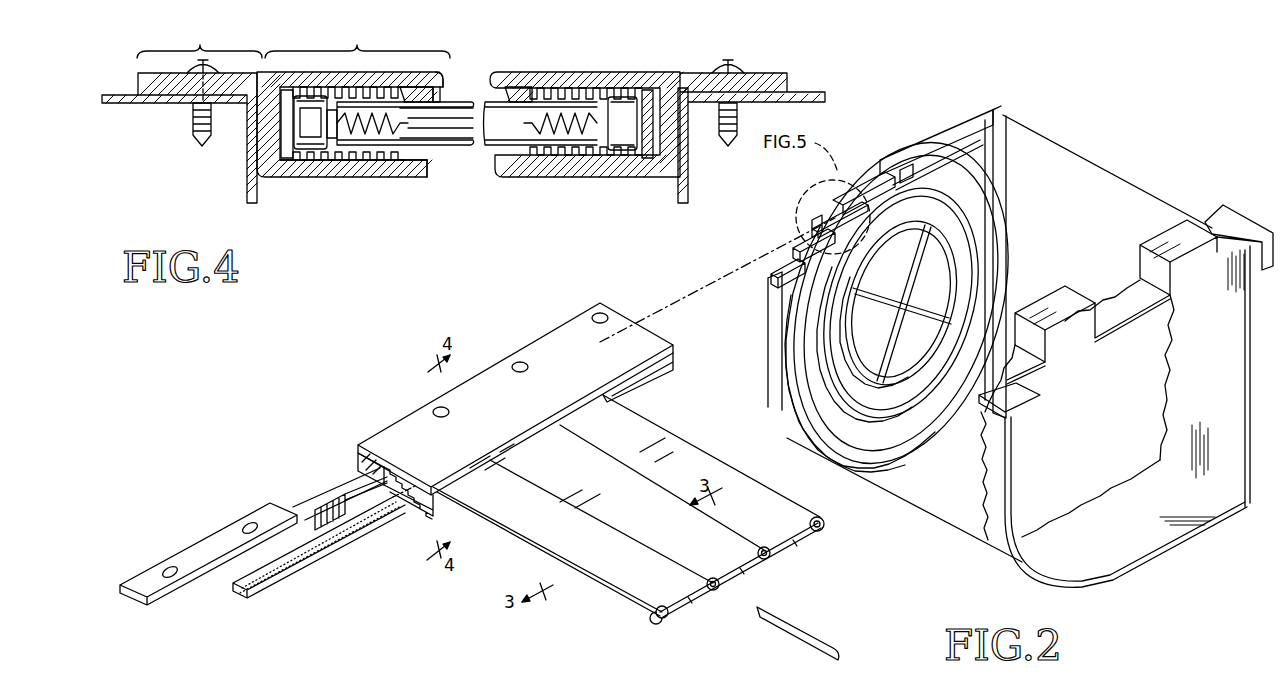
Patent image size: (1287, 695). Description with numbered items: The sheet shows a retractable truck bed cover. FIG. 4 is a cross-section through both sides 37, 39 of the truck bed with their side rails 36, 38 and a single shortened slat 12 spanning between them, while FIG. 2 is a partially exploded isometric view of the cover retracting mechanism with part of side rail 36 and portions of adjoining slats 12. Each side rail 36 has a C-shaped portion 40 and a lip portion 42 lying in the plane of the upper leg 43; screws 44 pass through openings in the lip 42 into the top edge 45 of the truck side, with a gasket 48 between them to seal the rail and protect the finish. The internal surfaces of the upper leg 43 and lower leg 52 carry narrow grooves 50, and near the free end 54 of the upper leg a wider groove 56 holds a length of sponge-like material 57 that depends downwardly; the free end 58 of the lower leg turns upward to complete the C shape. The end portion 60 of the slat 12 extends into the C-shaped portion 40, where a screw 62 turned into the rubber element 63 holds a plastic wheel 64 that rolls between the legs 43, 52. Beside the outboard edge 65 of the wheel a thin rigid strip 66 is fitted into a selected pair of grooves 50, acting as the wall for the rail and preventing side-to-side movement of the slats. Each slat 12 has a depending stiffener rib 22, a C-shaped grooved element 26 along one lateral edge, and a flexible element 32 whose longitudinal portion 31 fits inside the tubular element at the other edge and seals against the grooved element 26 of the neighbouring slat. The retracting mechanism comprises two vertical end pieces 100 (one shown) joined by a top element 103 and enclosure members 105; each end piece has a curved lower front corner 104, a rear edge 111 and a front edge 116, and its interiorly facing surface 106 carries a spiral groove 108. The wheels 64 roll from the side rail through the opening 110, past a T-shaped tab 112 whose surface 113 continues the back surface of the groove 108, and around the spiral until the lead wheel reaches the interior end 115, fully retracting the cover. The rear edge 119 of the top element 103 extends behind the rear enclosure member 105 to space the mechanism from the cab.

In FIG. 4, the slat-like element 12 is at (457, 103).
In FIG. 2, the slat-like element 12 is at (748, 540).
In FIG. 2, the stiffener rib 22 is at (794, 540).
In FIG. 2, the grooved element 26 is at (824, 528).
In FIG. 2, the longitudinal portion 31 is at (660, 614).
In FIG. 2, the flexible element 32 is at (830, 638).
In FIG. 4, the side rail 36 is at (314, 190).
In FIG. 2, the side rail 36 is at (550, 350).
In FIG. 4, the side of truck bed 37 is at (688, 160).
In FIG. 4, the side rail 38 is at (648, 70).
In FIG. 4, the side of truck bed 39 is at (247, 162).
In FIG. 4, the C-shaped portion 40 is at (357, 41).
In FIG. 4, the lip portion 42 is at (199, 41).
In FIG. 4, the upper leg 43 is at (399, 87).
In FIG. 4, the screw 44 is at (187, 68).
In FIG. 4, the top edge 45 is at (157, 103).
In FIG. 4, the gasket 48 is at (140, 90).
In FIG. 2, the gasket 48 is at (215, 530).
In FIG. 4, the narrow grooves 50 is at (347, 87).
In FIG. 4, the lower leg 52 is at (380, 170).
In FIG. 4, the free end of upper leg 54 is at (444, 82).
In FIG. 4, the wider groove 56 is at (421, 87).
In FIG. 4, the sponge-like material 57 is at (437, 137).
In FIG. 2, the sponge-like material 57 is at (320, 553).
In FIG. 4, the free end of lower leg 58 is at (424, 177).
In FIG. 4, the end portion of slat 60 is at (373, 112).
In FIG. 4, the screw 62 is at (325, 147).
In FIG. 4, the rubber element 63 is at (424, 103).
In FIG. 4, the wheel 64 is at (313, 103).
In FIG. 4, the outboard edge of wheel 65 is at (303, 127).
In FIG. 4, the strip 66 is at (283, 90).
In FIG. 2, the strip 66 is at (363, 497).
In FIG. 2, the end piece 100 is at (929, 134).
In FIG. 2, the top element 103 is at (1113, 330).
In FIG. 2, the lower front corner 104 is at (837, 458).
In FIG. 2, the enclosure member 105 is at (988, 481).
In FIG. 2, the interiorly facing surface 106 is at (985, 248).
In FIG. 2, the spiral groove 108 is at (800, 366).
In FIG. 2, the opening 110 is at (833, 217).
In FIG. 2, the rear edge of end piece 111 is at (1002, 196).
In FIG. 2, the tab 112 is at (832, 205).
In FIG. 2, the tab surface 113 is at (812, 229).
In FIG. 2, the interior end of groove 115 is at (803, 431).
In FIG. 2, the front edge of end piece 116 is at (773, 350).
In FIG. 2, the rear edge of top element 119 is at (1263, 253).